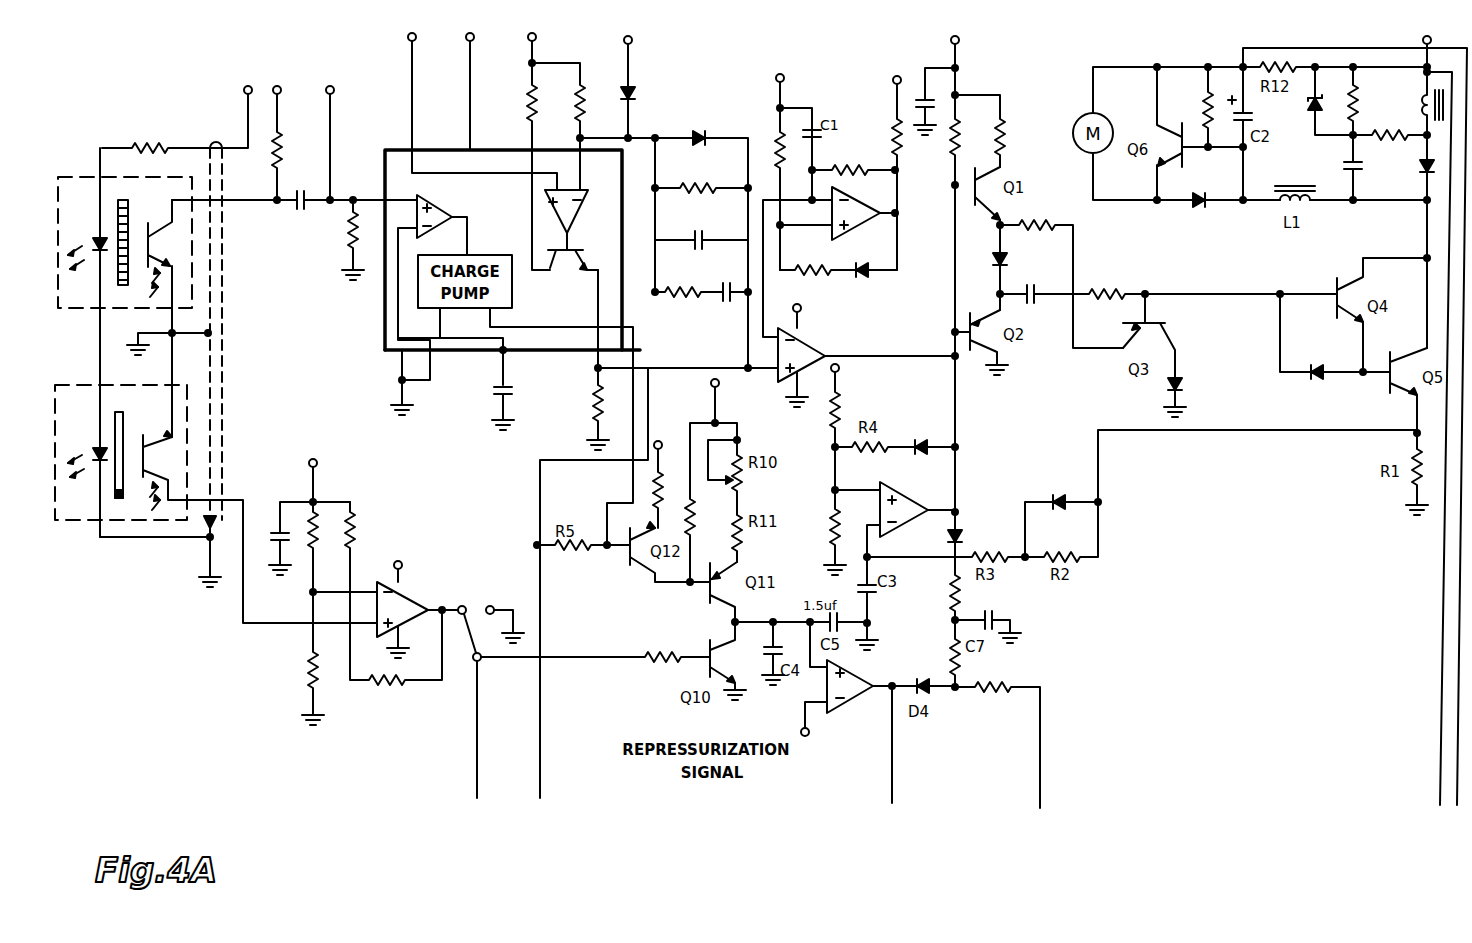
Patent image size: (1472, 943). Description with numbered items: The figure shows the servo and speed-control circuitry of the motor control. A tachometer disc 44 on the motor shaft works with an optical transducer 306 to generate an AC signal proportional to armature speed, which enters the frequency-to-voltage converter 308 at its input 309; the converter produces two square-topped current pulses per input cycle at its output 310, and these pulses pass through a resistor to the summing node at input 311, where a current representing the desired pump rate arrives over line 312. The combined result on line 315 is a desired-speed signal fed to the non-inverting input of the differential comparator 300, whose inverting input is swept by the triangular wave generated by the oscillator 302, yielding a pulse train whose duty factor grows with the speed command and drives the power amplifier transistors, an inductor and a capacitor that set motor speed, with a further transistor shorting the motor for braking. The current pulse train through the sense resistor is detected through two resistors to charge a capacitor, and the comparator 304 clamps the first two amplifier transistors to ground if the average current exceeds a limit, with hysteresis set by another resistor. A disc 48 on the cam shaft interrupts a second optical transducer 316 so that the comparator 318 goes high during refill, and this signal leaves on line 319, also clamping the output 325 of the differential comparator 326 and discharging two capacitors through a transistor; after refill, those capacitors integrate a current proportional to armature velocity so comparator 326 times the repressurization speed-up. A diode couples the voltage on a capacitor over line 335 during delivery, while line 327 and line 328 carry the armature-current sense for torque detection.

The optical transducer 306 is at (85, 174).
The tachometer disc 44 is at (134, 212).
The disc 48 is at (132, 426).
The optical transducer 316 is at (73, 521).
The frequency-to-voltage converter 308 is at (385, 347).
The input 309 is at (354, 196).
The output 310 is at (643, 349).
The input 311 is at (578, 138).
The line 312 is at (540, 494).
The line 315 is at (681, 368).
The differential comparator 300 is at (814, 352).
The oscillator 302 is at (864, 224).
The comparator 304 is at (908, 500).
The comparator 318 is at (411, 608).
The line 319 is at (477, 760).
The output 325 is at (892, 778).
The differential comparator 326 is at (856, 698).
The line 335 is at (1040, 780).
The supply line 328 is at (1455, 725).
The line 327 is at (1438, 792).